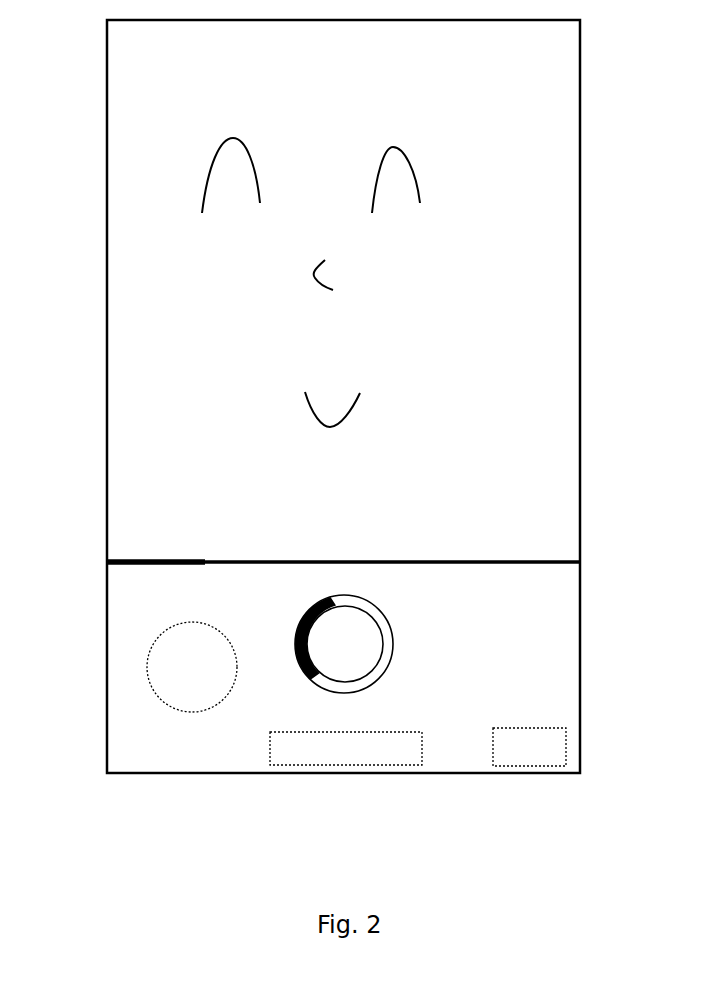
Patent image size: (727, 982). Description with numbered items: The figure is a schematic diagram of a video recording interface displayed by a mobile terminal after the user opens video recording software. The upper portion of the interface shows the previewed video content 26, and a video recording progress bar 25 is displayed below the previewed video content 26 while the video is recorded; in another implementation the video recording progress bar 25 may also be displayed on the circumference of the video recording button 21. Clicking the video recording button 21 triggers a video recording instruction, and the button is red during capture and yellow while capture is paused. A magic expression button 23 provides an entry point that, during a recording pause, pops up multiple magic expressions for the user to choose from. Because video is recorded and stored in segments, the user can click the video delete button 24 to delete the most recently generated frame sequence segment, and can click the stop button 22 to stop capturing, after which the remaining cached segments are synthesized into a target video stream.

The video recording button 21 is at (365, 650).
The stop button 22 is at (538, 765).
The magic expression button 23 is at (148, 672).
The video delete button 24 is at (395, 767).
The video recording progress bar 25 is at (310, 607).
The previewed video content 26 is at (545, 208).